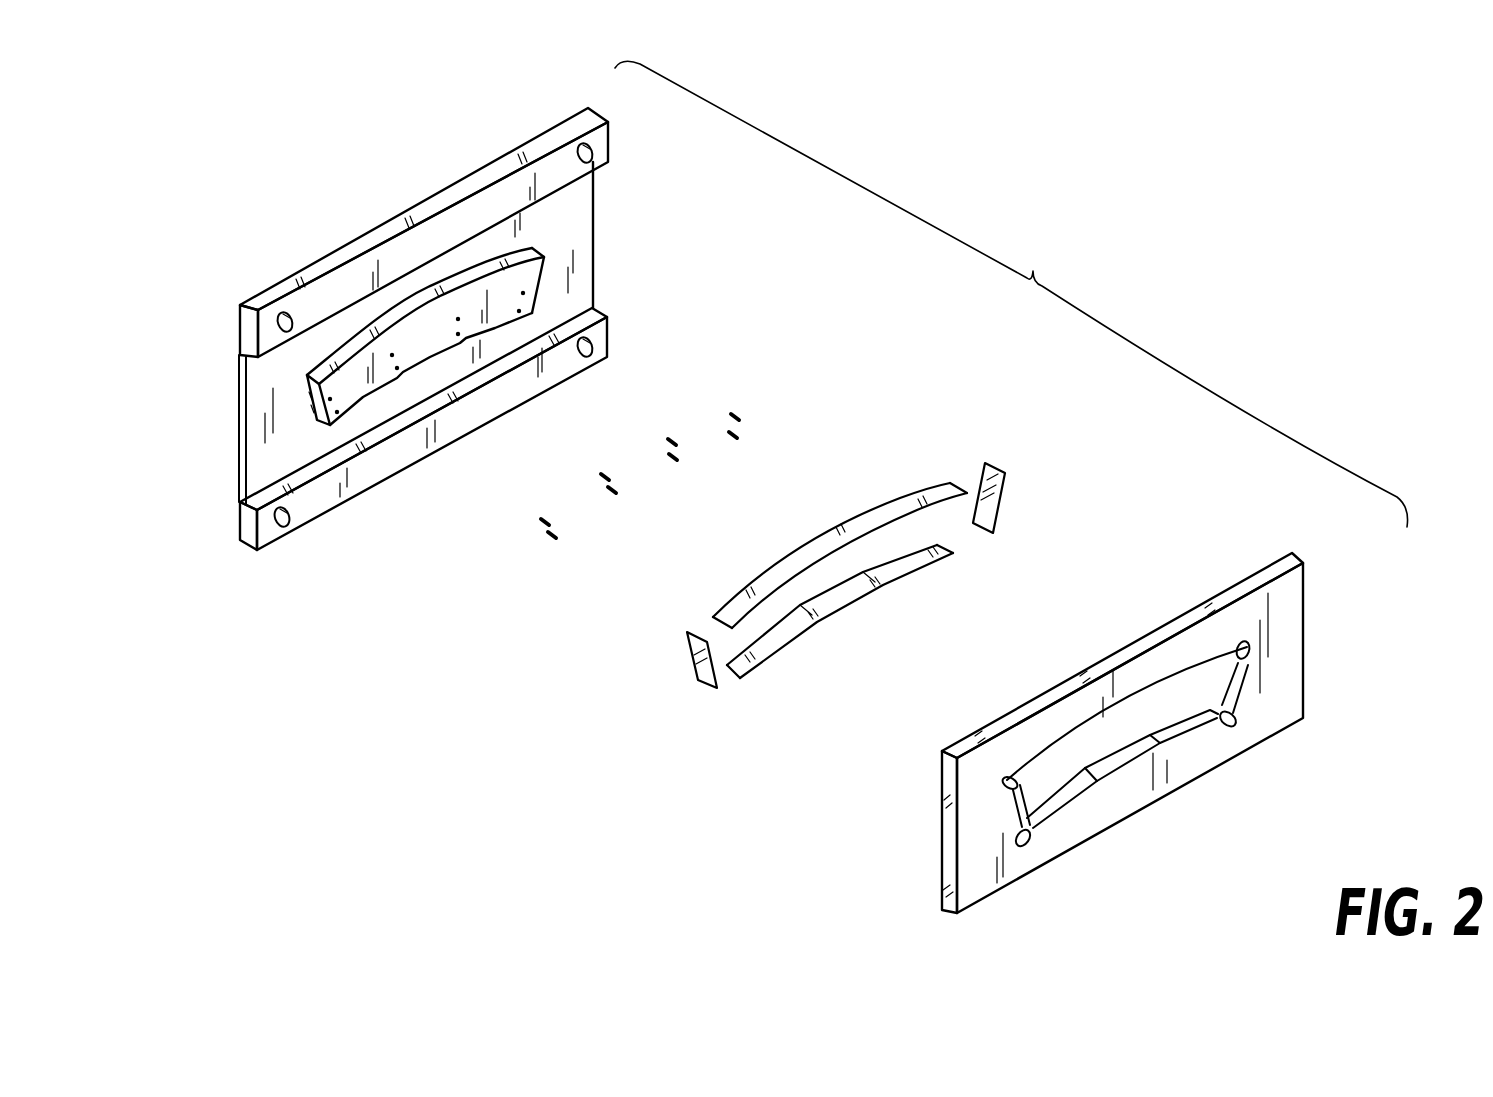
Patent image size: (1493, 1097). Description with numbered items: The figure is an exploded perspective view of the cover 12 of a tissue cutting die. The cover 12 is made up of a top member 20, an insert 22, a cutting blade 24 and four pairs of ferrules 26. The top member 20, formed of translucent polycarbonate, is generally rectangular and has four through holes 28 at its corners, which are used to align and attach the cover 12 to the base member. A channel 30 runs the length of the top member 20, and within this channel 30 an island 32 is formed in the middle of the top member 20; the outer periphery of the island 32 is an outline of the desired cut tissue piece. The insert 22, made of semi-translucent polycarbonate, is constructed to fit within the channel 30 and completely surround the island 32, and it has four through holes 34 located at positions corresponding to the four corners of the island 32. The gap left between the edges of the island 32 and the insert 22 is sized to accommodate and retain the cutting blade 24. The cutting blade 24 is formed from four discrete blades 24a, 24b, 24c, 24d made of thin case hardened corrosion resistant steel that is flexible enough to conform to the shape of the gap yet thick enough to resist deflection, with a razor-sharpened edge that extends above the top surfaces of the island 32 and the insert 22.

The cover 12 is at (1011, 294).
The top member 20 is at (382, 457).
The insert 22 is at (1182, 655).
The cutting blade 24 is at (858, 581).
The discrete blade 24a is at (893, 507).
The discrete blade 24b is at (992, 515).
The discrete blade 24c is at (865, 594).
The discrete blade 24d is at (648, 672).
The ferrules 26 is at (776, 430).
The through holes 28 is at (598, 155).
The channel 30 is at (236, 446).
The island 32 is at (513, 293).
The through holes 34 is at (1247, 645).